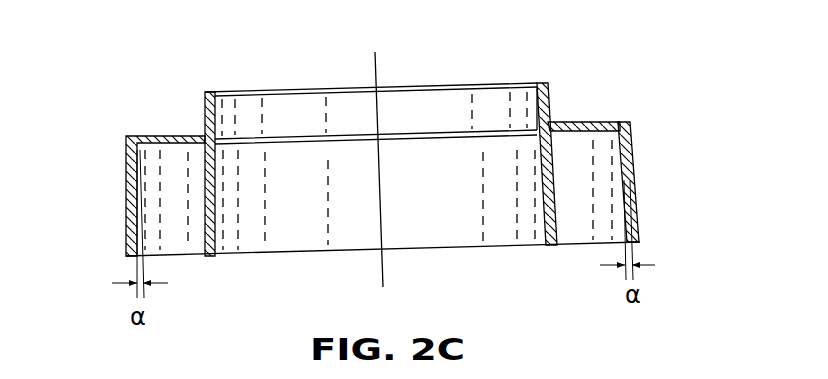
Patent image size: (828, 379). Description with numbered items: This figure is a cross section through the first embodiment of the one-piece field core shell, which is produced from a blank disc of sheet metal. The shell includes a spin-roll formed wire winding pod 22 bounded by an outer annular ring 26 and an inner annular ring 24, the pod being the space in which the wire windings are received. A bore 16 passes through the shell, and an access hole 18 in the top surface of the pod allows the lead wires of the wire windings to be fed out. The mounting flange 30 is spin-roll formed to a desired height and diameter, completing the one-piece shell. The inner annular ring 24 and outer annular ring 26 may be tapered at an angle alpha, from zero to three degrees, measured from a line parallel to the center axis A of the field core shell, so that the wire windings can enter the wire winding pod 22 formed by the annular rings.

The bore 16 is at (355, 148).
The access hole 18 is at (585, 122).
The spin-roll formed wire winding pod 22 is at (177, 240).
The inner annular ring 24 is at (215, 248).
The outer annular ring 26 is at (163, 135).
The mounting flange 30 is at (538, 82).
The center axis A is at (366, 157).